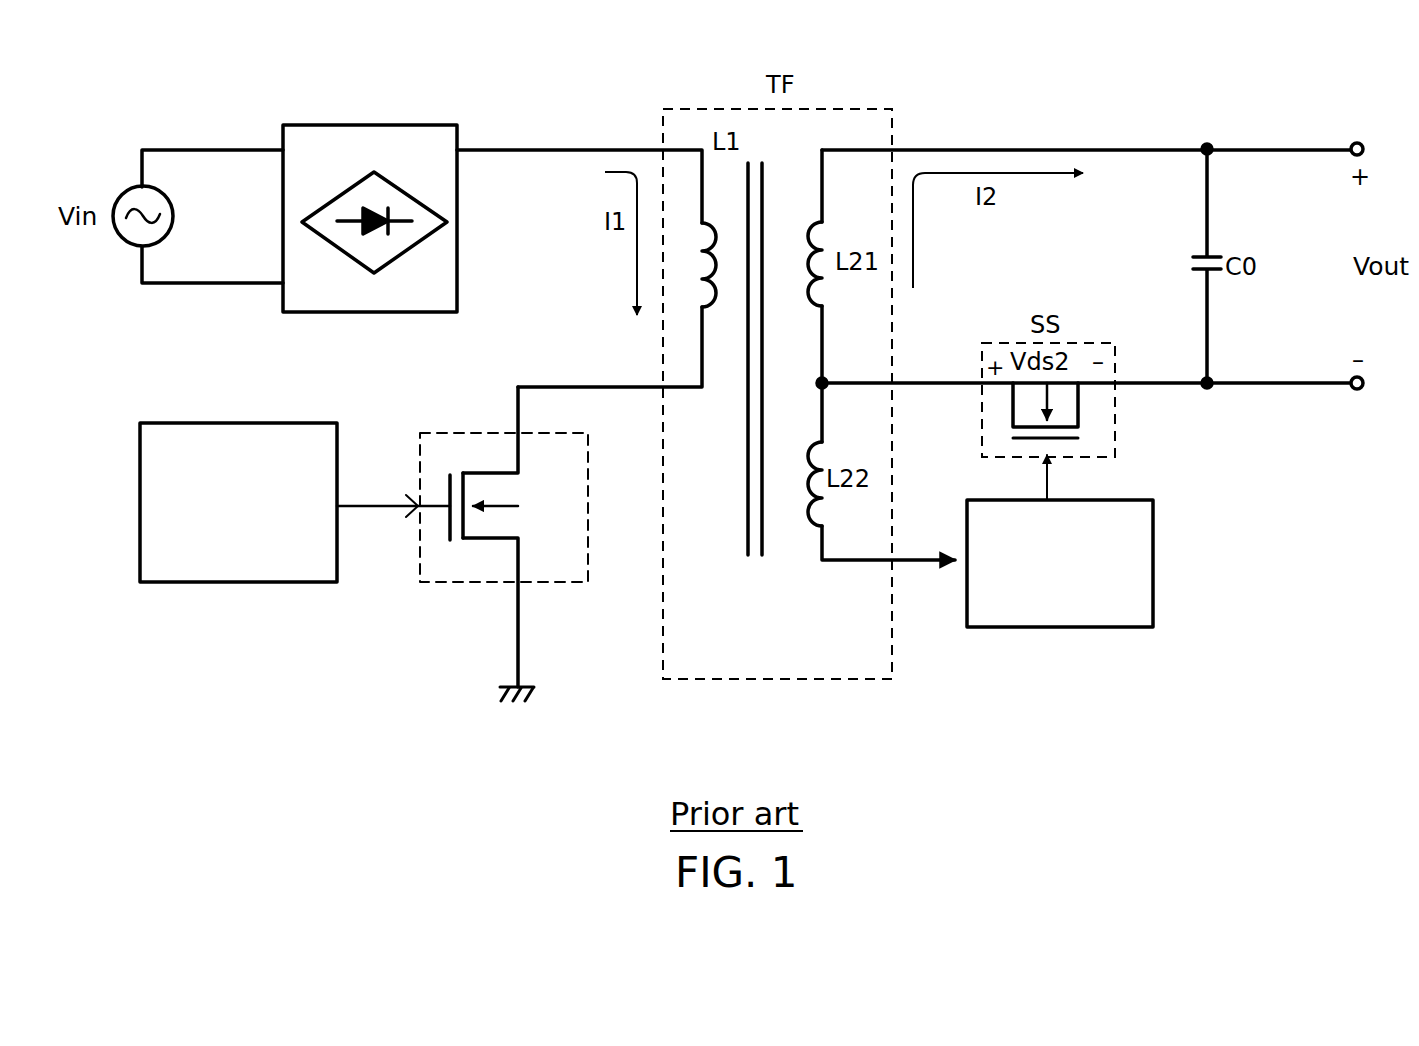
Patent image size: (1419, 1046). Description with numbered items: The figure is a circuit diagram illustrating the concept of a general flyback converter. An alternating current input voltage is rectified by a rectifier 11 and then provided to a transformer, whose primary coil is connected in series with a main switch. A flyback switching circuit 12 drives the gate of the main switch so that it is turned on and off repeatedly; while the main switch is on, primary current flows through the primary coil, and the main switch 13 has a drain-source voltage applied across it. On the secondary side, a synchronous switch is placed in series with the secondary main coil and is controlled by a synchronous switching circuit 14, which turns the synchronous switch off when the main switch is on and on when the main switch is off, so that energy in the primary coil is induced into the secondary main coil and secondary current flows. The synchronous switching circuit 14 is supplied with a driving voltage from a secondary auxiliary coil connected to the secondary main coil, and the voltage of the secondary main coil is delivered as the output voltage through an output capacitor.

The rectifier 11 is at (368, 136).
The flyback switching circuit 12 is at (236, 582).
The main switch MS 13 is at (452, 585).
The synchronous switching circuit 14 is at (1045, 627).